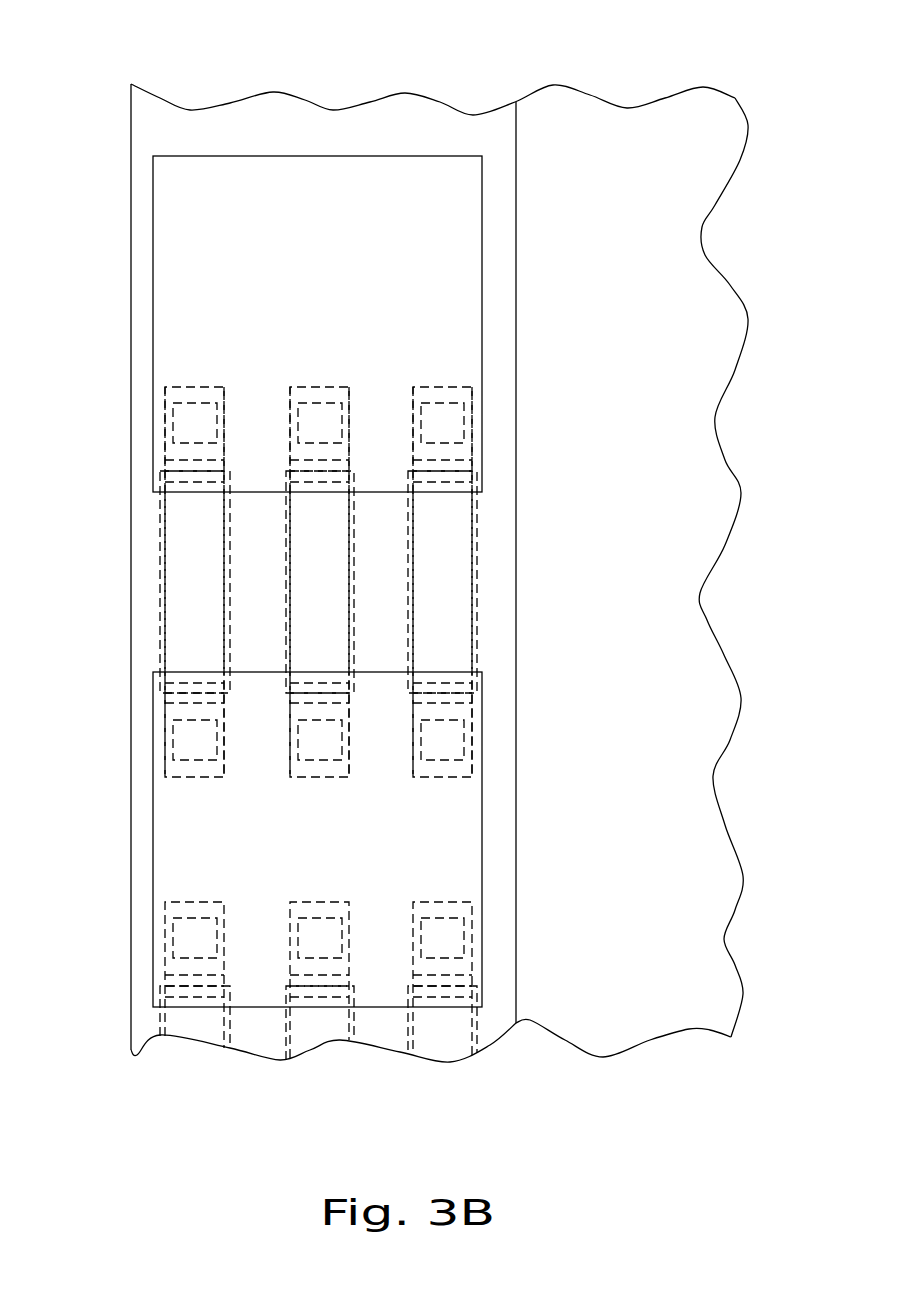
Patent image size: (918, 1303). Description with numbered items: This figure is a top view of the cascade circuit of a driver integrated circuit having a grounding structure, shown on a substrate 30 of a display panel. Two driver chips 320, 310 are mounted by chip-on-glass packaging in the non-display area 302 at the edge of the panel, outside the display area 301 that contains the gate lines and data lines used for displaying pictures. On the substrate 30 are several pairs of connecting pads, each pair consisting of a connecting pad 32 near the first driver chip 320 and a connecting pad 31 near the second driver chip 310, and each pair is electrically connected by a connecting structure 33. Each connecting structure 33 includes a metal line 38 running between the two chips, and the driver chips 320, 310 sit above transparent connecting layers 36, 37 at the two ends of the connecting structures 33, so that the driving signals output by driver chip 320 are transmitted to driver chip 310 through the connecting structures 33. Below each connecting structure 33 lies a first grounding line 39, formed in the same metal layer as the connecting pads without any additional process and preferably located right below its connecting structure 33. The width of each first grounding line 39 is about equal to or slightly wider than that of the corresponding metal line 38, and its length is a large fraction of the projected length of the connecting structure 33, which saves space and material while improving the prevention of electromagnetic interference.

The substrate 30 is at (703, 227).
The display area 301 is at (617, 1032).
The non-display area 302 is at (258, 1036).
The driver chip 310 is at (386, 1008).
The driver chip 320 is at (301, 156).
The connecting pad 32 is at (193, 403).
The connecting pad 31 is at (192, 760).
The connecting structure 33 is at (73, 525).
The transparent connecting layer 36 is at (167, 438).
The transparent connecting layer 37 is at (167, 717).
The metal line 38 is at (167, 580).
The first grounding line 39 is at (231, 577).